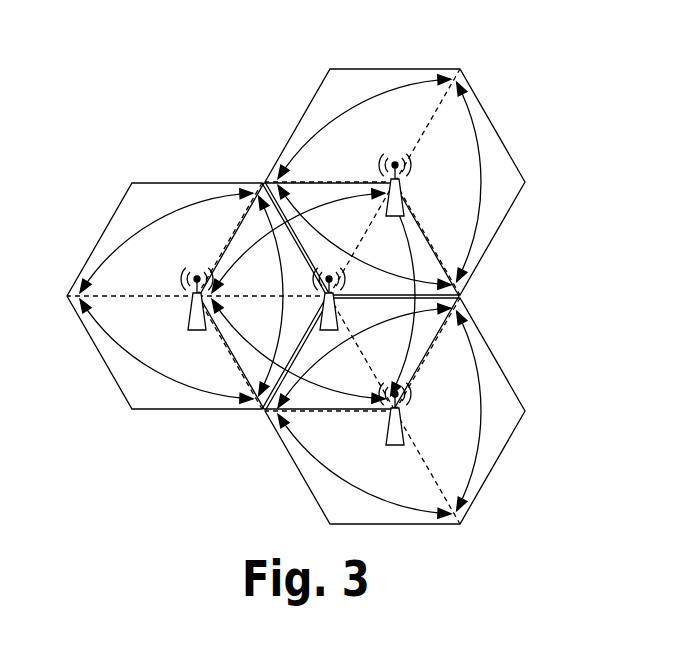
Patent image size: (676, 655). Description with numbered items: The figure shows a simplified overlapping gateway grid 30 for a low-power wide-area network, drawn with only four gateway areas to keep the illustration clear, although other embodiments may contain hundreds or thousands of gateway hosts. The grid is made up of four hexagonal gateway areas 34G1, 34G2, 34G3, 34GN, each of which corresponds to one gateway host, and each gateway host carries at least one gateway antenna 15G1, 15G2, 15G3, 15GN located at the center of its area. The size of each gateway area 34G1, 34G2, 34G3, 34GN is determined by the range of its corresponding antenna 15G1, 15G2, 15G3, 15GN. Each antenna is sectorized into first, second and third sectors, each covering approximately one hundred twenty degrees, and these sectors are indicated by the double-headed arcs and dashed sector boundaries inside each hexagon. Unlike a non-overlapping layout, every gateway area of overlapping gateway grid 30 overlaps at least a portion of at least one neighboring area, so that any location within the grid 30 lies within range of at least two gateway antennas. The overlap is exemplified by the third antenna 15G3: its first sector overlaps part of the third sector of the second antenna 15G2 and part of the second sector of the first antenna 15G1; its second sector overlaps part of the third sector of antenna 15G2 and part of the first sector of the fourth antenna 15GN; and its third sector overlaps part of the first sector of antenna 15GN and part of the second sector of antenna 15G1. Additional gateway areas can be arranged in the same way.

The overlapping gateway grid 30 is at (238, 78).
The gateway area 34G1 is at (99, 240).
The gateway area 34G2 is at (495, 123).
The gateway area 34G3 is at (468, 278).
The gateway area 34GN is at (313, 505).
The gateway antenna 15G1 is at (188, 314).
The gateway antenna 15G2 is at (402, 197).
The gateway antenna 15G3 is at (338, 315).
The gateway antenna 15GN is at (385, 430).